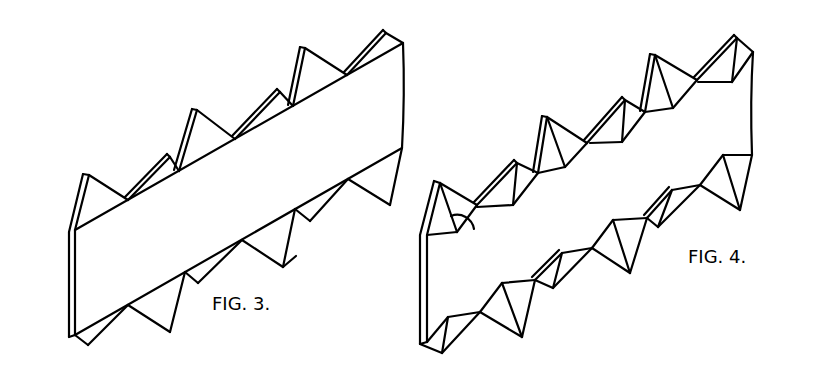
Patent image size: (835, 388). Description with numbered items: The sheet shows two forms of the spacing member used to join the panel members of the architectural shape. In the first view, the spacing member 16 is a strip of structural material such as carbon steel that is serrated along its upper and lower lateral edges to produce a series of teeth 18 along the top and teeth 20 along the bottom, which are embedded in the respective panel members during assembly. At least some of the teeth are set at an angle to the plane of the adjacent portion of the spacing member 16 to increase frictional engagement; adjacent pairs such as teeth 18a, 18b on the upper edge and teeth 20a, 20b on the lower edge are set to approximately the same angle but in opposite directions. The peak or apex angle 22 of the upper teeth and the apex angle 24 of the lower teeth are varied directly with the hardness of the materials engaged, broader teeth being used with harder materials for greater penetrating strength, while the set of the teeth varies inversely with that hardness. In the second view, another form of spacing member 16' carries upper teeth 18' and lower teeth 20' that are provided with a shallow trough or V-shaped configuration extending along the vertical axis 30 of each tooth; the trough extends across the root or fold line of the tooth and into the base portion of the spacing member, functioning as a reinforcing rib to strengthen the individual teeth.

In FIG. 3, the spacing member 16 is at (55, 283).
In FIG. 3, the teeth 18 is at (139, 175).
In FIG. 3, the tooth 18a is at (80, 184).
In FIG. 3, the tooth 18b is at (179, 165).
In FIG. 3, the apex angle 22 is at (275, 92).
In FIG. 3, the apex angle 24 is at (310, 222).
In FIG. 3, the teeth 20 is at (127, 321).
In FIG. 3, the tooth 20a is at (90, 345).
In FIG. 3, the tooth 20b is at (160, 334).
In FIG. 4, the spacing member 16' is at (409, 289).
In FIG. 4, the teeth 18' is at (479, 197).
In FIG. 4, the vertical axis / trough 30 is at (475, 228).
In FIG. 4, the teeth 20' is at (477, 320).